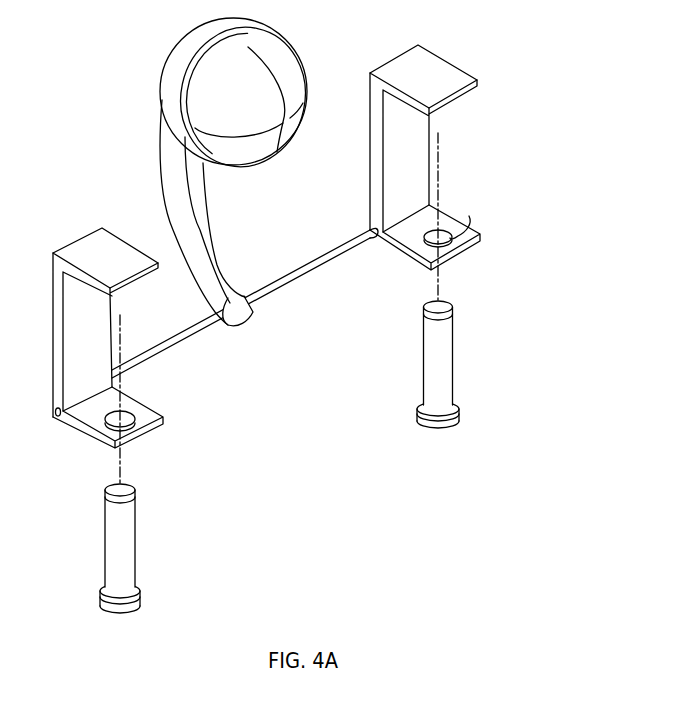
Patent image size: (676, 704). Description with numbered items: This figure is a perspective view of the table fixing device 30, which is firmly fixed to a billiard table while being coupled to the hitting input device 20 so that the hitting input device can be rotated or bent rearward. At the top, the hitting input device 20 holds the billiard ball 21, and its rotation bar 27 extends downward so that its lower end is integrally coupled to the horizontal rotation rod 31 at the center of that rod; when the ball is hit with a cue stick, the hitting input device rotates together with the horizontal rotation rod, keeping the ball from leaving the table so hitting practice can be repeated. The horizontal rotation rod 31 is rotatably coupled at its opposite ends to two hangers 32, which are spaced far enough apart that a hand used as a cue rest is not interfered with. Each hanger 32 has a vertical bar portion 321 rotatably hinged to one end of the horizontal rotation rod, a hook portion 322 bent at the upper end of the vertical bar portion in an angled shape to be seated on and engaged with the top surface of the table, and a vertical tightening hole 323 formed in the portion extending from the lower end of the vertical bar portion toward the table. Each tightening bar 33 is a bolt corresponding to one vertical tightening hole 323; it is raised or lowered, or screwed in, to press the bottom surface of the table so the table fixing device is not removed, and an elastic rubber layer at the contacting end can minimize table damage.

The hitting input device 20 is at (163, 68).
The billiard ball 21 is at (287, 78).
The rotation bar 27 is at (173, 193).
The table fixing device 30 is at (308, 329).
The horizontal rotation rod 31 is at (180, 347).
The hanger 32 is at (143, 442).
The tightening bar 33 is at (323, 482).
The vertical bar portion 321 is at (410, 155).
The hook portion 322 is at (463, 95).
The vertical tightening hole 323 is at (470, 247).